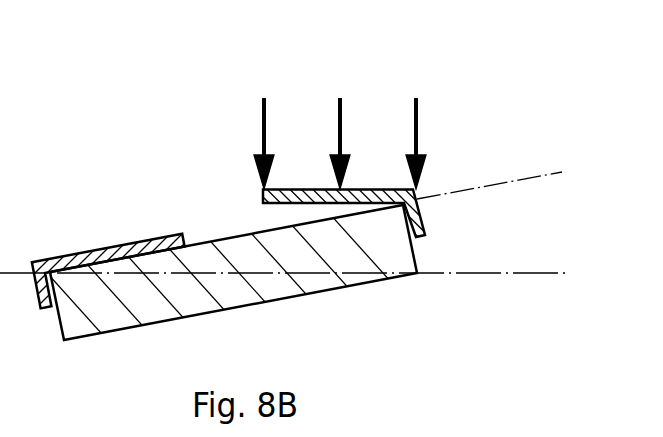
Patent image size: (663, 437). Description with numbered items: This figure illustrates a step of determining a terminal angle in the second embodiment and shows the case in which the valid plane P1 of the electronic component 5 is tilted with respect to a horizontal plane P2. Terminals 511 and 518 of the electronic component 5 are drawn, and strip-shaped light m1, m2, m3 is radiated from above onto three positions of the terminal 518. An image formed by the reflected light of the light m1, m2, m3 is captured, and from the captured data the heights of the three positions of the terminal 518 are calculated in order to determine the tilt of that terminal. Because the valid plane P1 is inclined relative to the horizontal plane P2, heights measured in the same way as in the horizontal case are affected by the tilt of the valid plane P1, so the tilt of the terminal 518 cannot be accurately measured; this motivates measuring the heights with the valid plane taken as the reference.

The electronic component 5 is at (426, 188).
The terminal 511 is at (110, 243).
The terminal 518 is at (262, 193).
The strip-shaped light m1 is at (261, 117).
The strip-shaped light m2 is at (337, 117).
The strip-shaped light m3 is at (412, 117).
The valid plane P1 is at (546, 172).
The horizontal plane P2 is at (555, 275).